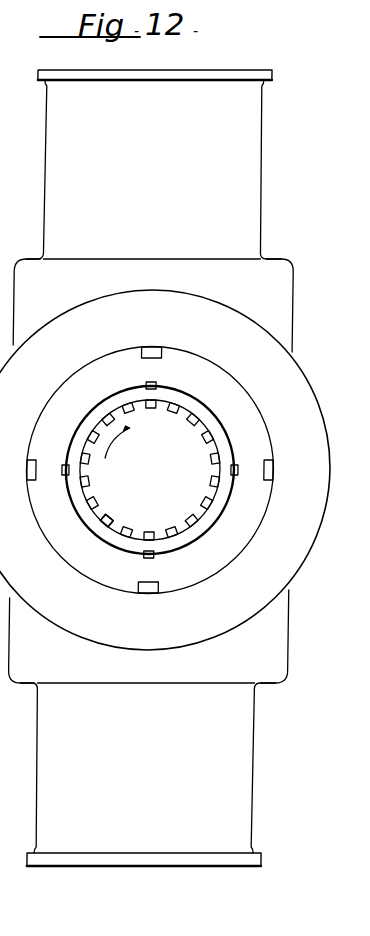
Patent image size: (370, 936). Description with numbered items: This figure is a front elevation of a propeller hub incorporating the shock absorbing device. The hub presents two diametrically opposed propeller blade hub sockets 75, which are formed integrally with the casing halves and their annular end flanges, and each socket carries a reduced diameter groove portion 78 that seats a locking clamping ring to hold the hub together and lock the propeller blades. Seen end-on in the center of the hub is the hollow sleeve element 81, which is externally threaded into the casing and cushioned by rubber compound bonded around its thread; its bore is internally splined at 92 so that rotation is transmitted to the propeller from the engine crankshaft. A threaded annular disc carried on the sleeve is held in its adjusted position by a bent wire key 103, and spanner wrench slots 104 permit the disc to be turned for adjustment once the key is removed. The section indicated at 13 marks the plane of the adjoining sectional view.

The section line 13- 13 is at (143, 58).
The propeller blade hub socket 75 is at (266, 113).
The reduced diameter groove portion 78 is at (267, 153).
The hollow sleeve element 81 is at (150, 470).
The internal splines 92 is at (116, 507).
The bent wire key 103 is at (150, 464).
The spanner wrench slot 104 is at (166, 470).